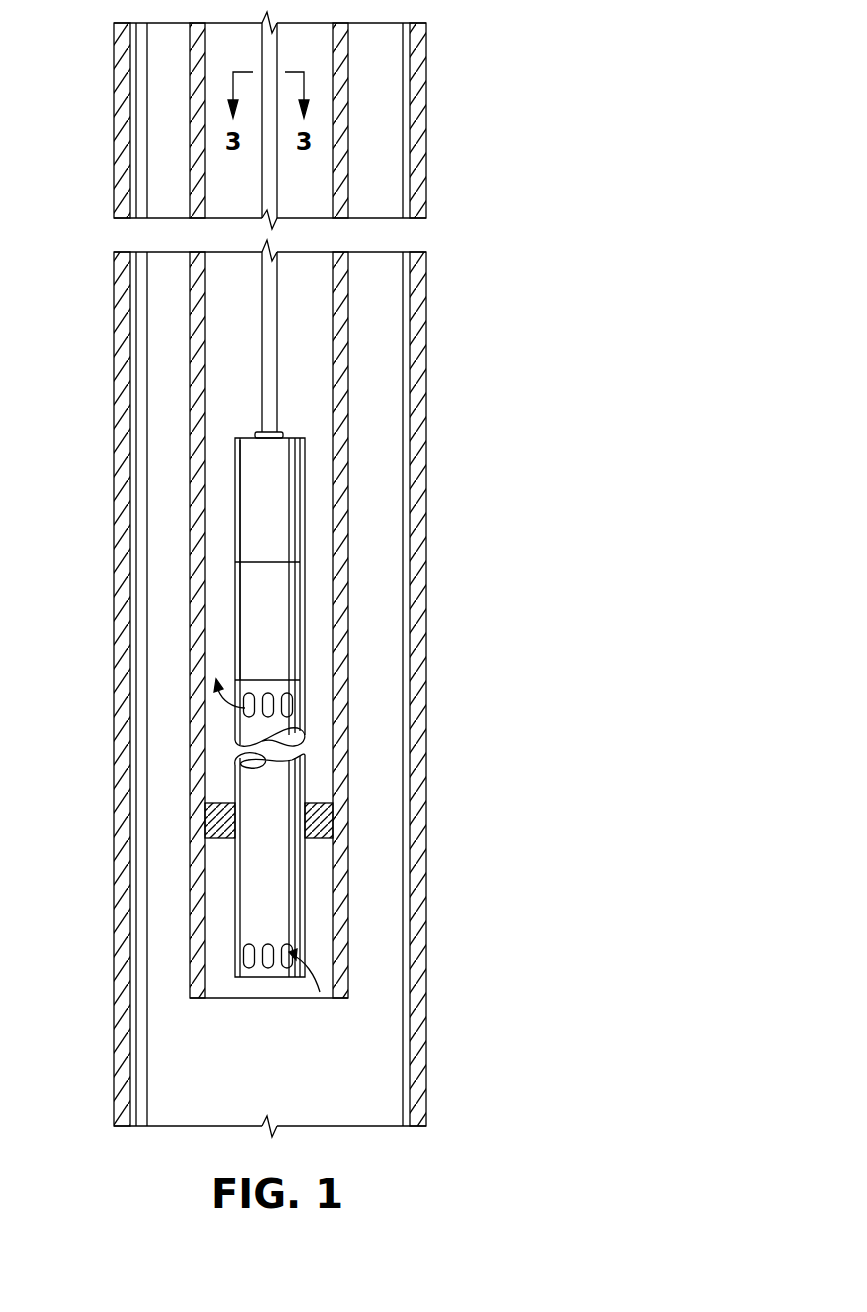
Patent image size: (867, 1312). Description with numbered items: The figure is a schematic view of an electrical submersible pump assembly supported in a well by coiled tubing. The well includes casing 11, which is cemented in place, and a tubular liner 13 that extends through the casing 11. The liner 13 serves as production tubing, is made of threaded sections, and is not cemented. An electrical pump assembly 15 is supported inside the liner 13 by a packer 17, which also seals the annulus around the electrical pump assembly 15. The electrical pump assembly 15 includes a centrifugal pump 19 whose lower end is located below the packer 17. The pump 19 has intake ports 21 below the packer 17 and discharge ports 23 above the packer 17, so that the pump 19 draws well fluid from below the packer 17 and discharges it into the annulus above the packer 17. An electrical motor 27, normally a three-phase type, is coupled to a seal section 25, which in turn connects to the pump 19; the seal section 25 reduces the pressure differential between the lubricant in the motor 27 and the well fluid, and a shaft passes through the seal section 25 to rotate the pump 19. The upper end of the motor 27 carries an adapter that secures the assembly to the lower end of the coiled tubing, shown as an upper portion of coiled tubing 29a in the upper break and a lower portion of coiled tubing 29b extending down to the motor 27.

The casing 11 is at (416, 514).
The tubular liner 13 is at (340, 470).
The electrical pump assembly 15 is at (235, 495).
The packer 17 is at (205, 812).
The centrifugal pump 19 is at (290, 883).
The intake ports 21 is at (295, 953).
The discharge ports 23 is at (288, 706).
The seal section 25 is at (287, 620).
The electrical motor 27 is at (252, 540).
The coiled tubing 29a is at (277, 180).
The coiled tubing 29b is at (277, 400).